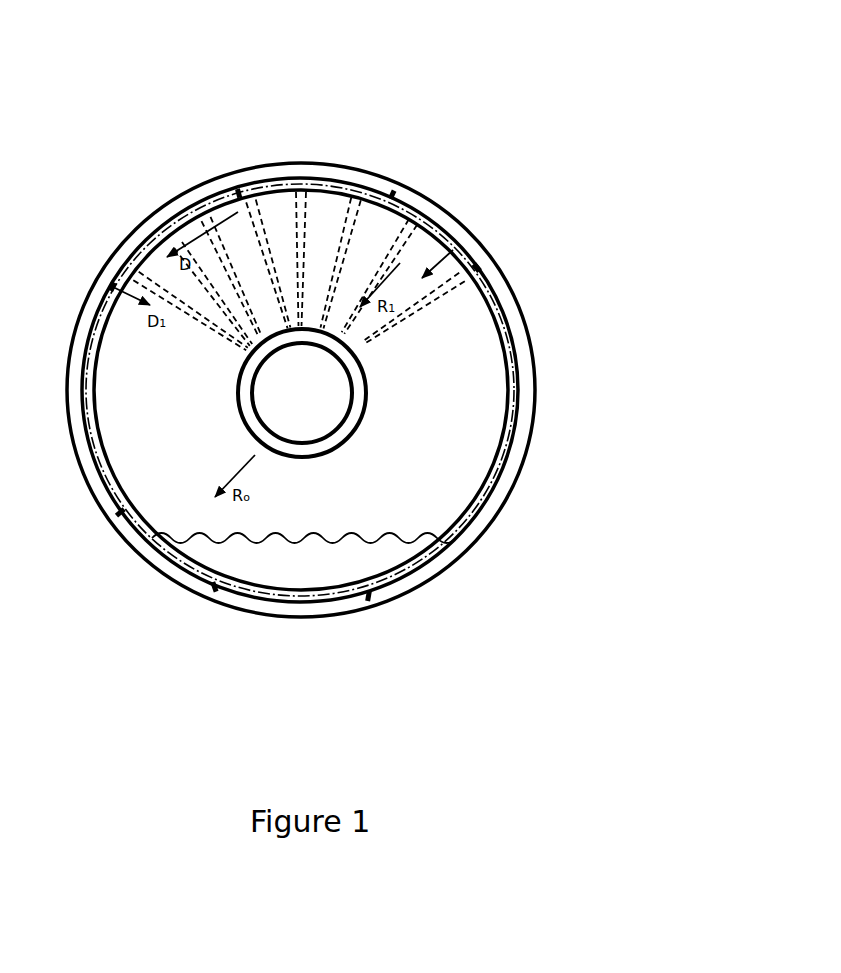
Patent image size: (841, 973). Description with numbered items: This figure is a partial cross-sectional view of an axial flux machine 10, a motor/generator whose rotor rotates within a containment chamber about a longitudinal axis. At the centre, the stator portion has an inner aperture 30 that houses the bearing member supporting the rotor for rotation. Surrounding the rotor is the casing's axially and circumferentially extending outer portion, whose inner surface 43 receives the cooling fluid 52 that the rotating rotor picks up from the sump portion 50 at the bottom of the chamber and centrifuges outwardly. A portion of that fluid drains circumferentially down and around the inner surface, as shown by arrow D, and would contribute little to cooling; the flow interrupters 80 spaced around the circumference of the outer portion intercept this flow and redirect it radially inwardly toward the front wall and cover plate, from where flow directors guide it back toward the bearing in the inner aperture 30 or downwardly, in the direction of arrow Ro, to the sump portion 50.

The axial flux machine 10 is at (415, 108).
The inner aperture 30 is at (335, 340).
The inner surface 43 is at (505, 412).
The sump portion 50 is at (213, 557).
The cooling fluid 52 is at (375, 556).
The flow interrupter 80 is at (387, 197).